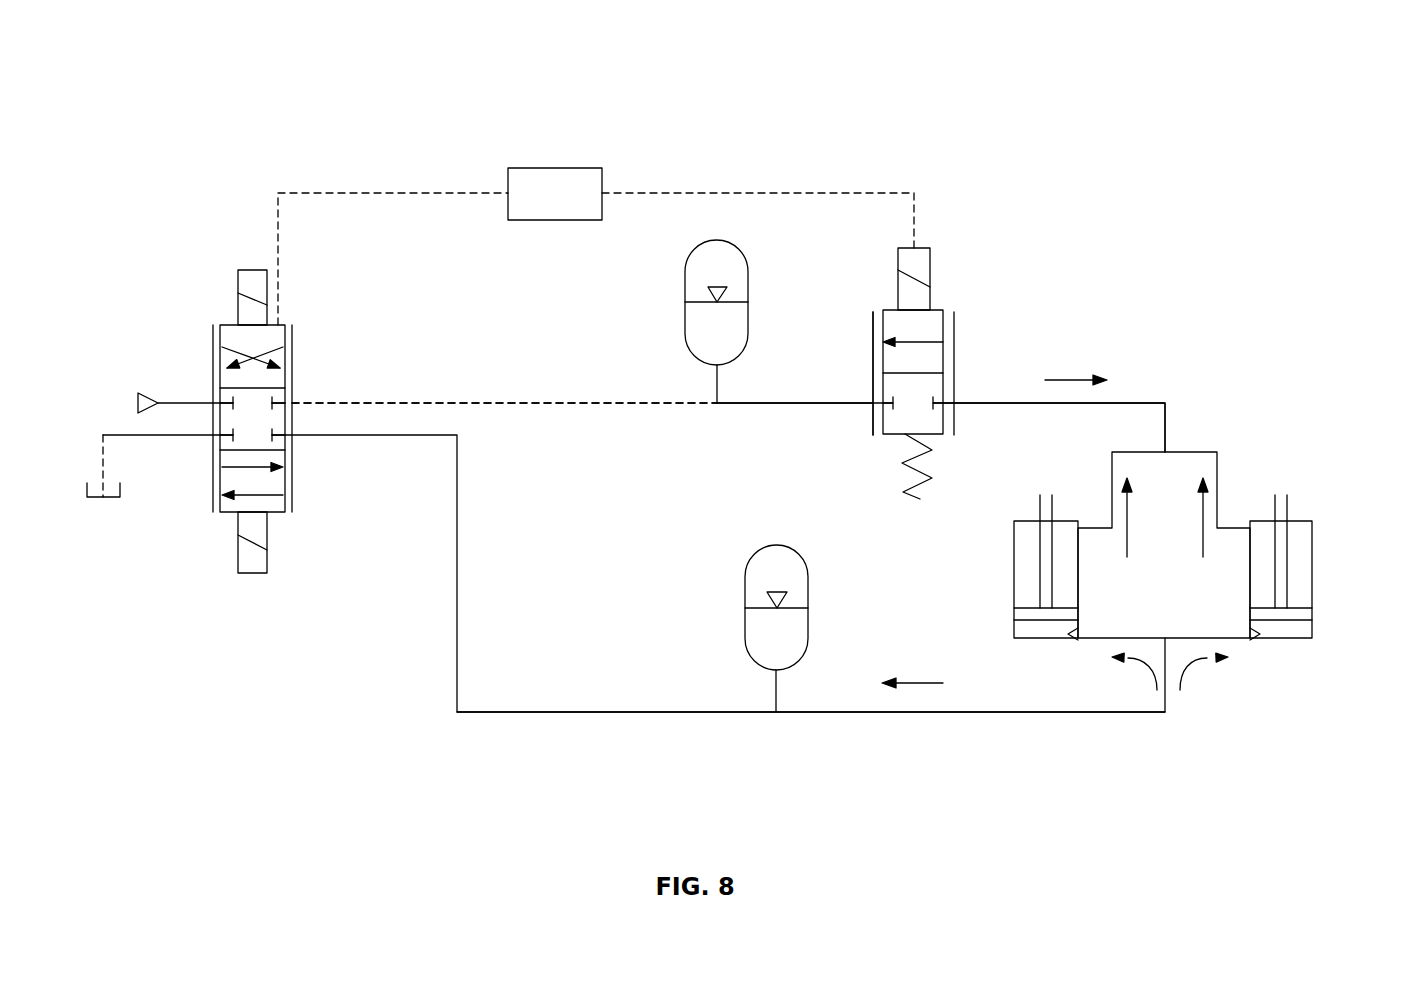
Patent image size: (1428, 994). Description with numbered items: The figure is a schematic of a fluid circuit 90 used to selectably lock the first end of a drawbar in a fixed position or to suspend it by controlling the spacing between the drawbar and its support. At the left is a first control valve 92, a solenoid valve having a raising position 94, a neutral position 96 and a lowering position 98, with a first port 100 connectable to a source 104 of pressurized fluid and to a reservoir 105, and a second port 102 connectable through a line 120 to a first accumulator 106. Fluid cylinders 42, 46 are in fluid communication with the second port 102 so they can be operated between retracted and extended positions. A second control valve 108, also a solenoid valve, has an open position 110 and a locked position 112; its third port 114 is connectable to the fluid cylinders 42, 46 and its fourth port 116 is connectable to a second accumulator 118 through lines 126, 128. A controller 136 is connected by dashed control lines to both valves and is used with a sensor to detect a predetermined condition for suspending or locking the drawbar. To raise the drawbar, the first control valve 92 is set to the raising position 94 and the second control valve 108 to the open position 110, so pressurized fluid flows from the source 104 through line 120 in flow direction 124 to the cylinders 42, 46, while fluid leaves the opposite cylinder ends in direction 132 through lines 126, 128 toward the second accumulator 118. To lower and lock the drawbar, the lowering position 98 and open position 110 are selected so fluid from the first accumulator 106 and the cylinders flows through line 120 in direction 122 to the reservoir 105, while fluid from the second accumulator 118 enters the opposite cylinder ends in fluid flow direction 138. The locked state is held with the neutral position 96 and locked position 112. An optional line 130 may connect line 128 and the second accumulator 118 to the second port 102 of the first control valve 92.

The fluid circuit 90 is at (196, 122).
The first control valve 92 is at (272, 320).
The raising position 94 is at (285, 353).
The neutral position 96 is at (285, 400).
The lowering position 98 is at (285, 475).
The first port 100 is at (213, 342).
The second port 102 is at (292, 503).
The source of pressurized fluid 104 is at (147, 395).
The reservoir 105 is at (110, 502).
The first accumulator 106 is at (810, 583).
The second control valve 108 is at (938, 310).
The open position 110 is at (945, 358).
The locked position 112 is at (945, 420).
The third port 114 is at (955, 328).
The fourth port 116 is at (872, 350).
The second accumulator 118 is at (748, 283).
The line 120 is at (597, 715).
The flow direction 122 is at (925, 680).
The flow direction 124 is at (1140, 668).
The line 126 is at (1140, 403).
The line 128 is at (798, 407).
The optional line 130 is at (580, 400).
The direction 132 is at (1205, 512).
The controller 136 is at (538, 207).
The fluid flow direction 138 is at (1068, 377).
The fluid cylinder 42 is at (1012, 555).
The fluid cylinder 46 is at (1315, 567).